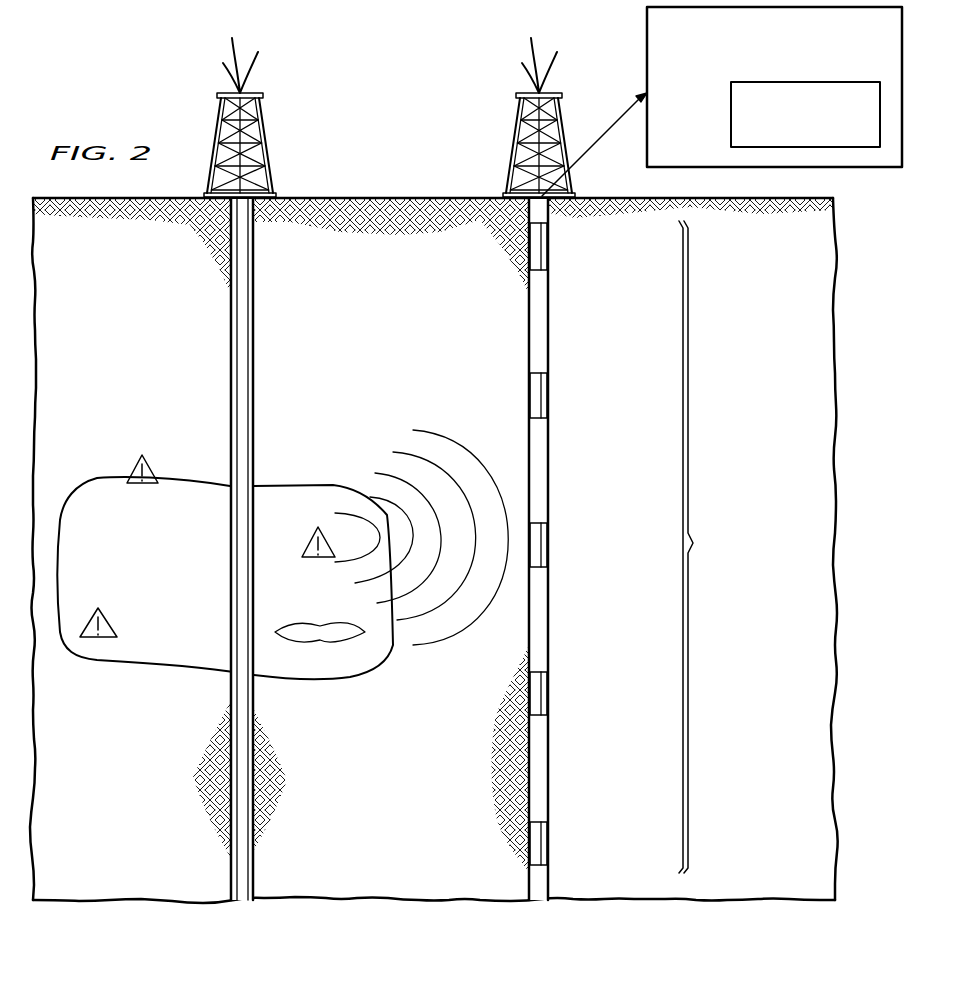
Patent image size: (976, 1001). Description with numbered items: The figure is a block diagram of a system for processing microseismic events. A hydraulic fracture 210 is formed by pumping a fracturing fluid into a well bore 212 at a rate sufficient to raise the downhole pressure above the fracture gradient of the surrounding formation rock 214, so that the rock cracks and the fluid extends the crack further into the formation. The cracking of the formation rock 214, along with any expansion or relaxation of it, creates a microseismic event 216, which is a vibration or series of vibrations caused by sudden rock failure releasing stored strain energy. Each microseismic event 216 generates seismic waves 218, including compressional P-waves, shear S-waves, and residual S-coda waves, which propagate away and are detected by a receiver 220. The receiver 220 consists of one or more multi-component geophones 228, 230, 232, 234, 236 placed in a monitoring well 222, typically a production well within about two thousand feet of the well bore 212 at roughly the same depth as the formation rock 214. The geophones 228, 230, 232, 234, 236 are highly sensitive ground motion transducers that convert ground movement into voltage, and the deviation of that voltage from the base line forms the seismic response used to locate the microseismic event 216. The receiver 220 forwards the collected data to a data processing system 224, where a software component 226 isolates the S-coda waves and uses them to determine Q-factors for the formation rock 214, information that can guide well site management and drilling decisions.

The hydraulic fracture 210 is at (335, 633).
The well bore 212 is at (280, 287).
The formation rock 214 is at (173, 625).
The microseismic event 216 is at (103, 697).
The seismic waves 218 is at (443, 438).
The receiver 220 is at (732, 547).
The monitoring well 222 is at (507, 167).
The data processing system 224 is at (641, 47).
The software component 226 is at (731, 114).
The geophone 228 is at (532, 269).
The geophone 230 is at (532, 419).
The geophone 232 is at (532, 568).
The geophone 234 is at (532, 716).
The geophone 236 is at (532, 866).